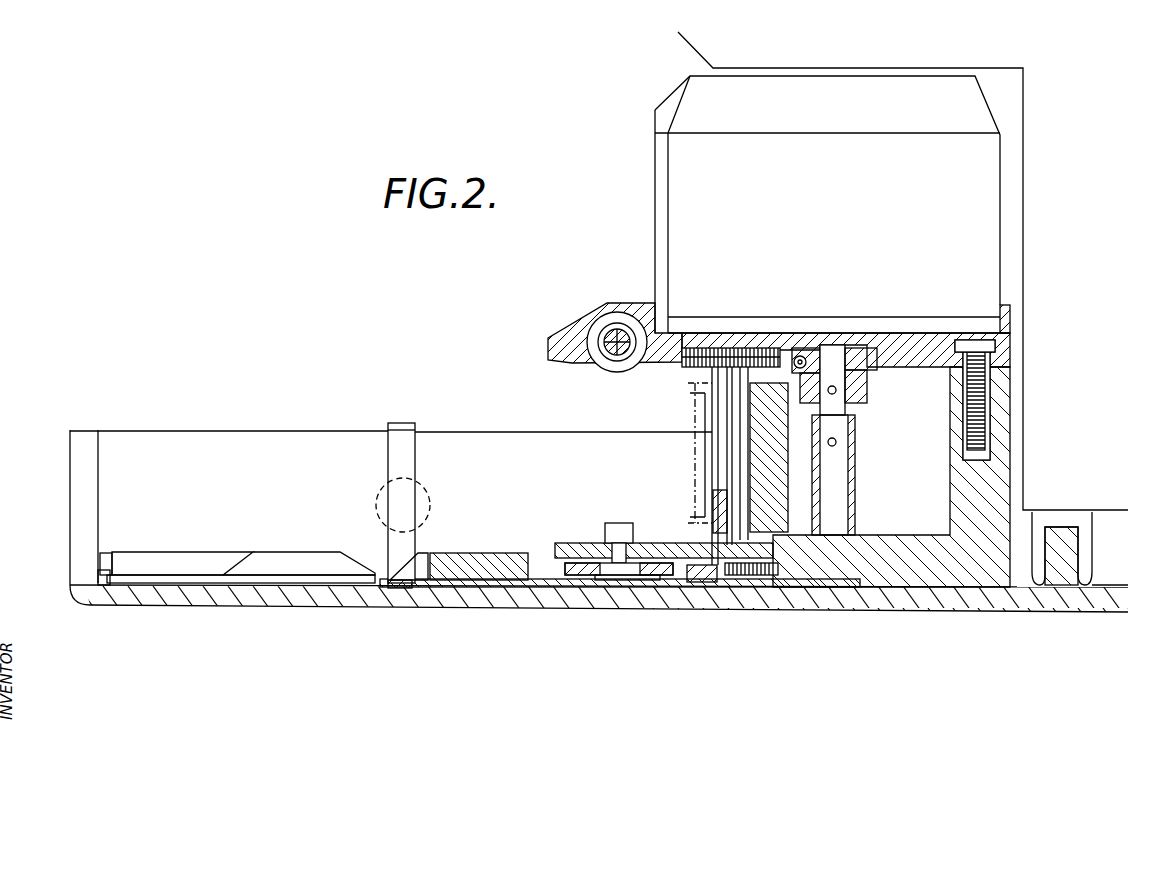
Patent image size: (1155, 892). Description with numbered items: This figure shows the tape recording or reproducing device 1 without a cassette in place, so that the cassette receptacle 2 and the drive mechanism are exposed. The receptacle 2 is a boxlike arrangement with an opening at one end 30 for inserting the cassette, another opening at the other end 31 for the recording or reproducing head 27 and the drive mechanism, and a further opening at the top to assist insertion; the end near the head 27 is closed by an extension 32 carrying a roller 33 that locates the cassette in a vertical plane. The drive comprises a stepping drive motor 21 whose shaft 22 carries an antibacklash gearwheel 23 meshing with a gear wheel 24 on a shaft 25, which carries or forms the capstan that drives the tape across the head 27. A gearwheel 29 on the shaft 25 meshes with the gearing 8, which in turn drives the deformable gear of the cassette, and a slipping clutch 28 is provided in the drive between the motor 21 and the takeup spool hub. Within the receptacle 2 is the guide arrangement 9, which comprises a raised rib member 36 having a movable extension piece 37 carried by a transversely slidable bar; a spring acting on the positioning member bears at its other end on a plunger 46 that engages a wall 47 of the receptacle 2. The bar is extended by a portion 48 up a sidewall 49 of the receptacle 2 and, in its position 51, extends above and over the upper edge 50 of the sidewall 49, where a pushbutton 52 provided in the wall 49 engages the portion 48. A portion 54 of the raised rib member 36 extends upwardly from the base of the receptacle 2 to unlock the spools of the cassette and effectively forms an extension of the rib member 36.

The tape recording or reproducing device 1 is at (610, 255).
The cassette receptacle 2 is at (235, 509).
The gearing 8 is at (587, 577).
The guide arrangement 9 is at (467, 588).
The stepping drive motor 21 is at (813, 224).
The shaft 22 is at (850, 338).
The antibacklash gearwheel 23 is at (797, 340).
The gear wheel 24 is at (698, 346).
The shaft 25 is at (750, 348).
The recording or reproducing head 27 is at (778, 446).
The slipping clutch 28 is at (702, 582).
The gearwheel 29 is at (752, 577).
The end 30 is at (85, 523).
The end 31 is at (685, 430).
The extension 32 is at (565, 338).
The roller 33 is at (607, 322).
The raised rib member 36 is at (487, 560).
The movable extension piece 37 is at (412, 572).
The plunger 46 is at (112, 563).
The wall 47 is at (82, 567).
The portion 48 is at (408, 462).
The sidewall 49 is at (585, 513).
The upper edge 50 is at (458, 432).
The position 51 is at (398, 422).
The pushbutton 52 is at (385, 493).
The portion 54 is at (293, 565).